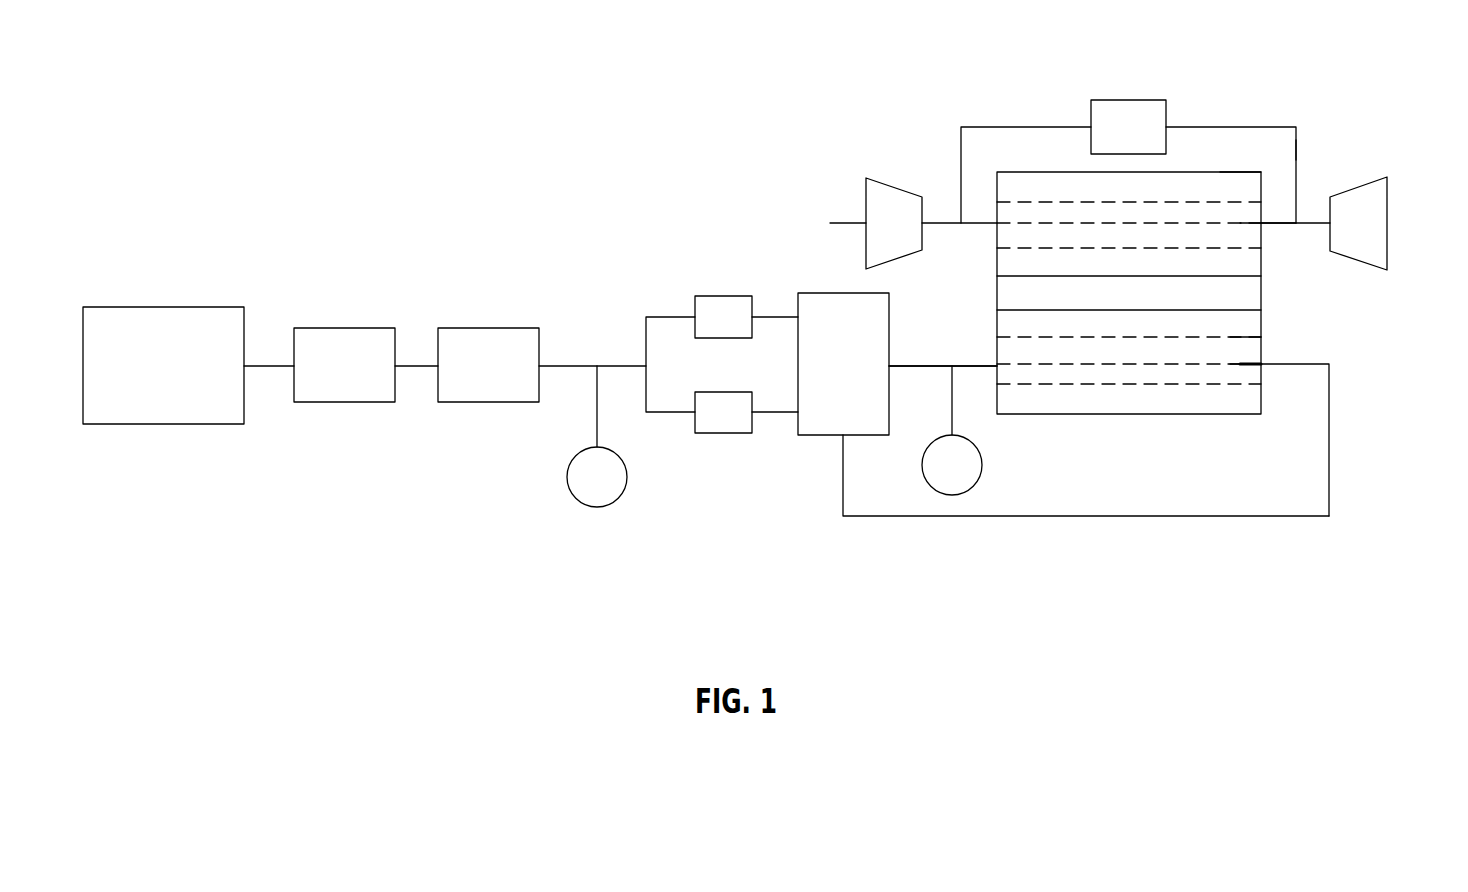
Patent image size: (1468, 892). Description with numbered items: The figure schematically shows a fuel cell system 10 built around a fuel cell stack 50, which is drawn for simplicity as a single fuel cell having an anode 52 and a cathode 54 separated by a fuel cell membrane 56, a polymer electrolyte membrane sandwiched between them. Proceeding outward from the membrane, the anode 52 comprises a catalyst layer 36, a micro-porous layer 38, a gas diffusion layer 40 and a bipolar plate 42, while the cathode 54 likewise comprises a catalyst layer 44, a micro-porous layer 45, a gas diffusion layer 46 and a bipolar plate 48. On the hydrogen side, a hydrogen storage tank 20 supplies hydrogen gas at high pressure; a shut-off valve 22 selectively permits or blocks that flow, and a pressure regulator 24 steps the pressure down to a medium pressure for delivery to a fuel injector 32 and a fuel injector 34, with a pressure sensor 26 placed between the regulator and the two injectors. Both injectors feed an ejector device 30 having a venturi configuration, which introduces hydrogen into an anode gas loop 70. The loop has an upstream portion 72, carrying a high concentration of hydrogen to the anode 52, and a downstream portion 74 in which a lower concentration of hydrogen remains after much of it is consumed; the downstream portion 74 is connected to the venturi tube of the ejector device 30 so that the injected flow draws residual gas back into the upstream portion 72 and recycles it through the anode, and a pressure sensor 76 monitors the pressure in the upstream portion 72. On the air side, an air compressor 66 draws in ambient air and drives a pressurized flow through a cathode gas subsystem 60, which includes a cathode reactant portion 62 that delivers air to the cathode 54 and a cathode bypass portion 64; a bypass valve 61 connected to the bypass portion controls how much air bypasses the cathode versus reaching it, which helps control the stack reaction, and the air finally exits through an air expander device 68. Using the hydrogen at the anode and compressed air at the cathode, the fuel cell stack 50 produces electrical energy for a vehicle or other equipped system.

The fuel cell system 10 is at (425, 122).
The hydrogen storage tank 20 is at (138, 307).
The shut-off valve 22 is at (340, 328).
The pressure regulator 24 is at (487, 328).
The pressure sensor 26 is at (567, 477).
The ejector device 30 is at (857, 293).
The fuel injector 32 is at (720, 296).
The fuel injector 34 is at (723, 433).
The catalyst layer 36 is at (1243, 330).
The micro-porous layer 38 is at (1260, 358).
The gas diffusion layer 40 is at (1255, 375).
The bipolar plate 42 is at (1163, 402).
The catalyst layer 44 is at (1003, 259).
The micro-porous layer 45 is at (1010, 234).
The gas diffusion layer 46 is at (1245, 212).
The bipolar plate 48 is at (1185, 190).
The fuel cell stack 50 is at (1000, 292).
The anode 52 is at (1253, 350).
The cathode 54 is at (1235, 172).
The fuel cell membrane 56 is at (1243, 302).
The cathode gas subsystem 60 is at (1225, 127).
The bypass valve 61 is at (1135, 100).
The cathode reactant portion 62 is at (1265, 226).
The cathode bypass portion 64 is at (1296, 147).
The air compressor 66 is at (1387, 218).
The air expander device 68 is at (897, 185).
The anode gas loop 70 is at (1145, 516).
The upstream portion 72 is at (960, 364).
The downstream portion 74 is at (1277, 516).
The pressure sensor 76 is at (983, 462).